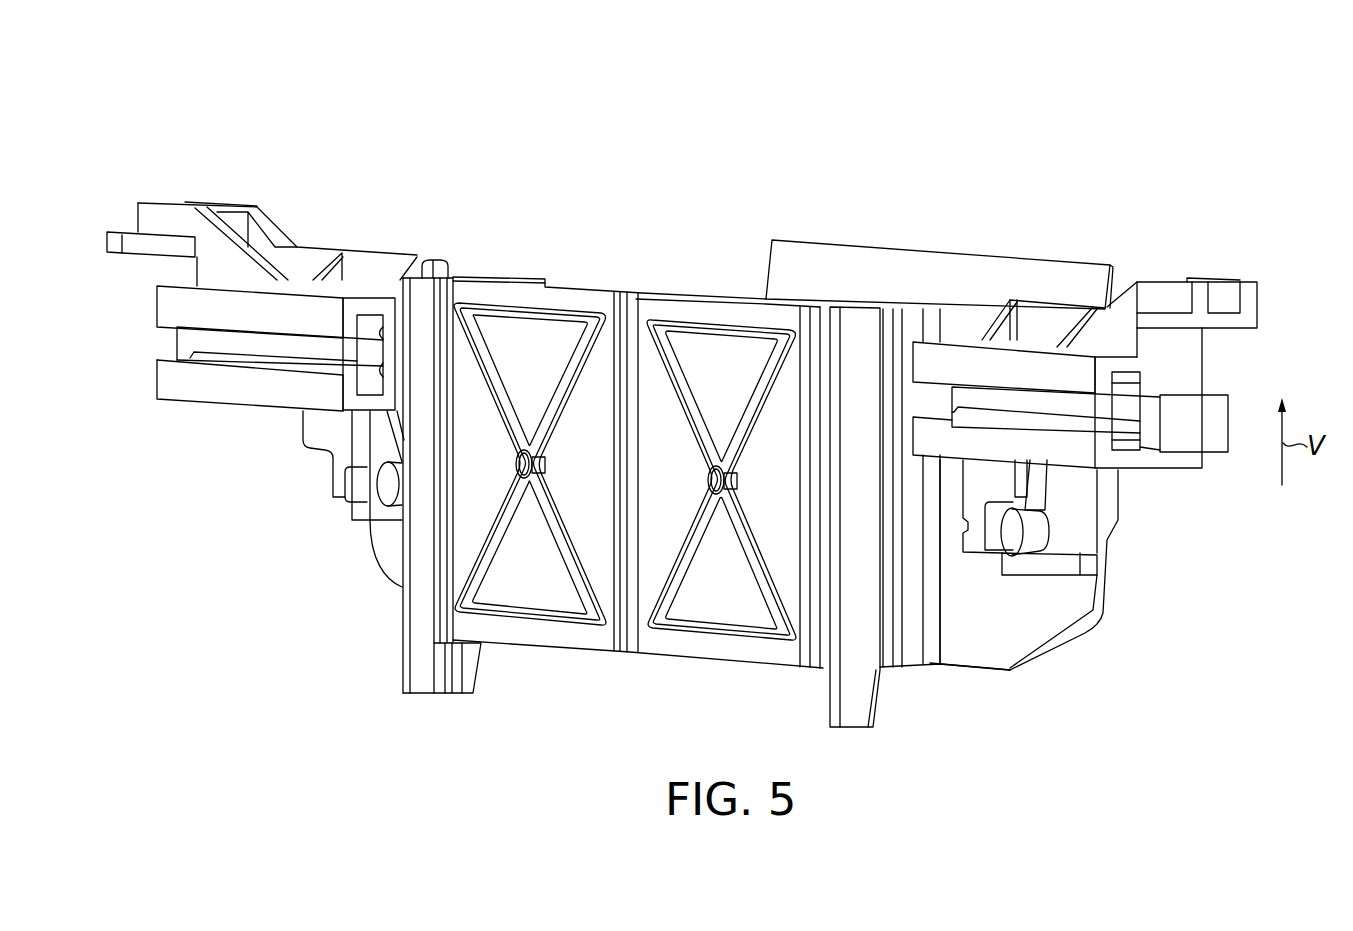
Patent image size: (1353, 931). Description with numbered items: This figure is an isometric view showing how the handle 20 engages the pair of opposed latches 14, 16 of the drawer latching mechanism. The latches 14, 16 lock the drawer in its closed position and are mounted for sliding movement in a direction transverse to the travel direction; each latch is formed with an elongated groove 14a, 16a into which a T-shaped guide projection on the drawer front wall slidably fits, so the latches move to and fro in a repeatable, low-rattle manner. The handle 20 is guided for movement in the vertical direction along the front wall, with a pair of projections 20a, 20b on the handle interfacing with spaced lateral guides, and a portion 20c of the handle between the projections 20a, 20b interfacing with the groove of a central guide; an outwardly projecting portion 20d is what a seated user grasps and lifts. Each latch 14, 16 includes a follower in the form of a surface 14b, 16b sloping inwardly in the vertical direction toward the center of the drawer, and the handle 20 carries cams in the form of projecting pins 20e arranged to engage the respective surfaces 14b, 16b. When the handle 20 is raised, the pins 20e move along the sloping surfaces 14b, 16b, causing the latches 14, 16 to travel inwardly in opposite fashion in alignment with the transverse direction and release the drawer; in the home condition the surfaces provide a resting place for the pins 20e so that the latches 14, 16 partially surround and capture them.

The latch 14 is at (1221, 245).
The elongated groove 14a is at (1150, 390).
The sloping surface 14b is at (1037, 482).
The latch 16 is at (233, 168).
The elongated groove 16a is at (175, 341).
The sloping surface 16b is at (390, 427).
The handle 20 is at (646, 249).
The projection 20a is at (853, 730).
The projection 20b is at (435, 697).
The portion of the handle 20c is at (623, 653).
The outwardly projecting portion 20d is at (923, 250).
The projecting pin 20e is at (377, 500).